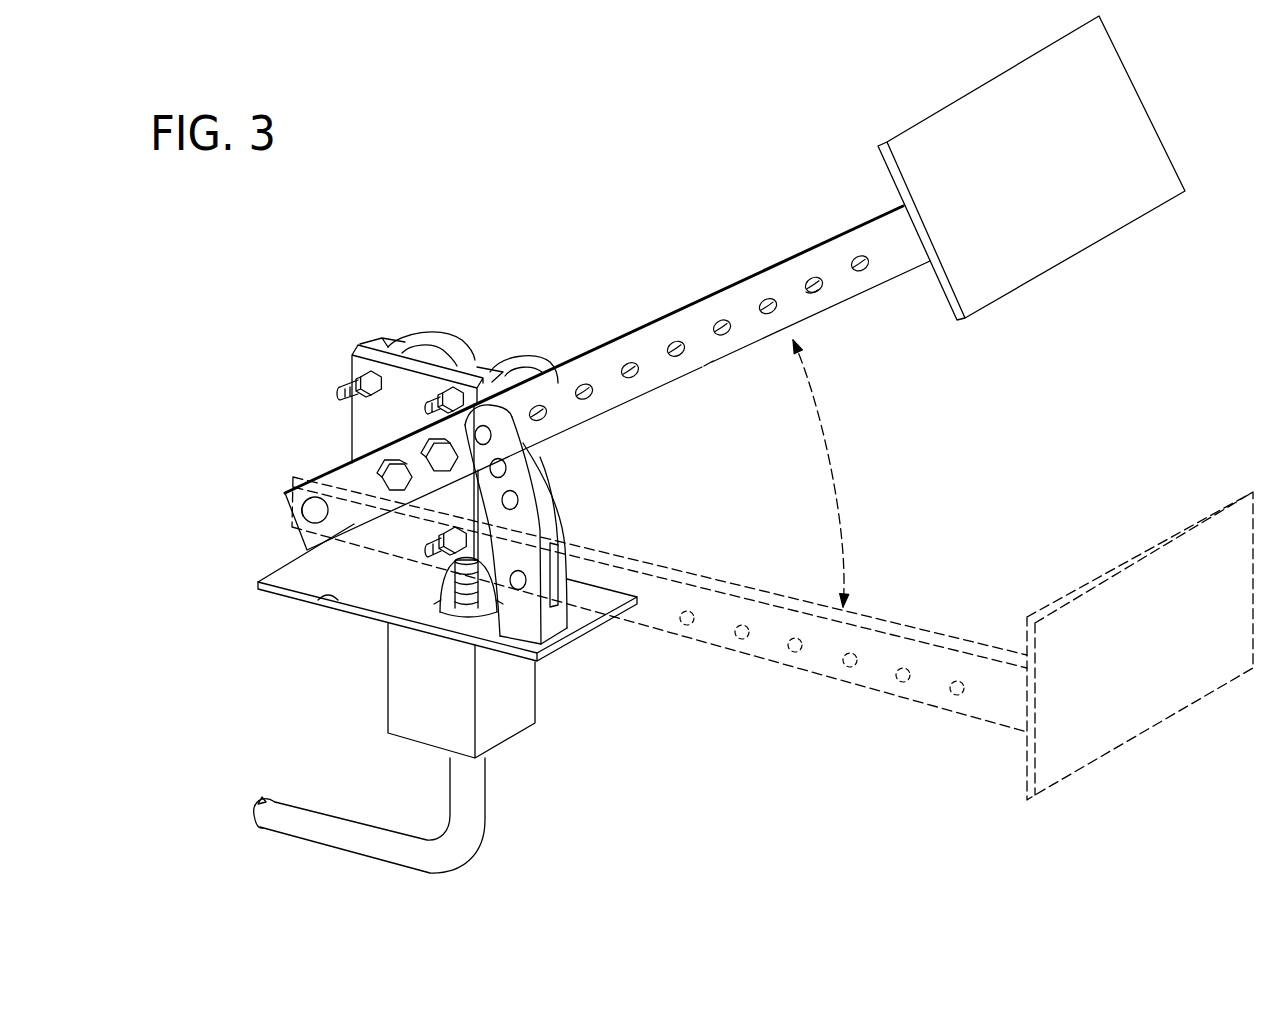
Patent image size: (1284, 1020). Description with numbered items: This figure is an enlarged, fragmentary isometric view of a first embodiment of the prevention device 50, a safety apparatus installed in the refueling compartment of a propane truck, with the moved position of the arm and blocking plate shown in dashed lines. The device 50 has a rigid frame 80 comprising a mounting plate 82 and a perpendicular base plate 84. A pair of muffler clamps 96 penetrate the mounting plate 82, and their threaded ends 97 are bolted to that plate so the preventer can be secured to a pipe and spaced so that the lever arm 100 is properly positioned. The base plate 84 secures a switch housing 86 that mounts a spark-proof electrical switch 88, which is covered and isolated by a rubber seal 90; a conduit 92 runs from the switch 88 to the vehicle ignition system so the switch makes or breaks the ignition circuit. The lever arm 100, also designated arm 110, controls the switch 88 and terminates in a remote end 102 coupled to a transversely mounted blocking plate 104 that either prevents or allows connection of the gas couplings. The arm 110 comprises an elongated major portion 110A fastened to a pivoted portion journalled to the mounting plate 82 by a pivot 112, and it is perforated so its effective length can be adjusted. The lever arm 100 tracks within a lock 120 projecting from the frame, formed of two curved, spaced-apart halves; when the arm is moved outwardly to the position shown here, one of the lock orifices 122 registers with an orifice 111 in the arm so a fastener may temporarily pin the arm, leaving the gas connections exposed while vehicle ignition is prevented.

The prevention device 50 is at (412, 402).
The rigid frame 80 is at (385, 402).
The mounting plate 82 is at (343, 438).
The base plate 84 is at (425, 615).
The switch housing 86 is at (493, 723).
The spark-proof electrical switch 88 is at (452, 607).
The rubber seal 90 is at (423, 610).
The conduit 92 is at (462, 828).
The muffler clamps 96 is at (400, 347).
The threaded ends 97 is at (318, 402).
The lever arm 100 is at (656, 495).
The remote end 102 is at (912, 312).
The blocking plate 104 is at (1052, 230).
The lever arm 110 is at (638, 392).
The elongated major portion 110A is at (708, 363).
The orifice 111 is at (800, 292).
The pivot 112 is at (290, 522).
The lock 120 is at (560, 557).
The lock orifices 122 is at (507, 630).